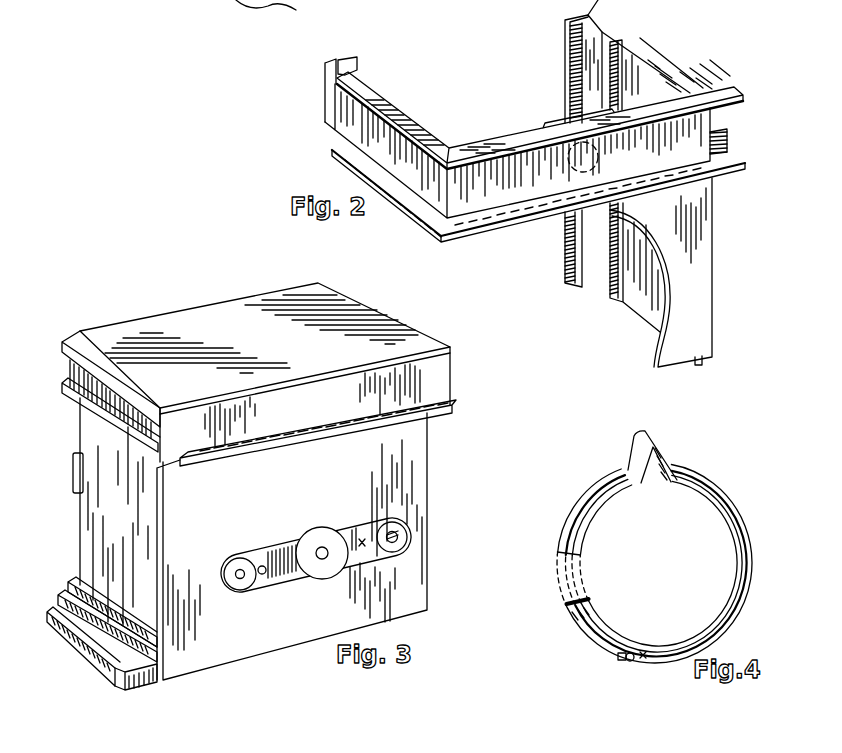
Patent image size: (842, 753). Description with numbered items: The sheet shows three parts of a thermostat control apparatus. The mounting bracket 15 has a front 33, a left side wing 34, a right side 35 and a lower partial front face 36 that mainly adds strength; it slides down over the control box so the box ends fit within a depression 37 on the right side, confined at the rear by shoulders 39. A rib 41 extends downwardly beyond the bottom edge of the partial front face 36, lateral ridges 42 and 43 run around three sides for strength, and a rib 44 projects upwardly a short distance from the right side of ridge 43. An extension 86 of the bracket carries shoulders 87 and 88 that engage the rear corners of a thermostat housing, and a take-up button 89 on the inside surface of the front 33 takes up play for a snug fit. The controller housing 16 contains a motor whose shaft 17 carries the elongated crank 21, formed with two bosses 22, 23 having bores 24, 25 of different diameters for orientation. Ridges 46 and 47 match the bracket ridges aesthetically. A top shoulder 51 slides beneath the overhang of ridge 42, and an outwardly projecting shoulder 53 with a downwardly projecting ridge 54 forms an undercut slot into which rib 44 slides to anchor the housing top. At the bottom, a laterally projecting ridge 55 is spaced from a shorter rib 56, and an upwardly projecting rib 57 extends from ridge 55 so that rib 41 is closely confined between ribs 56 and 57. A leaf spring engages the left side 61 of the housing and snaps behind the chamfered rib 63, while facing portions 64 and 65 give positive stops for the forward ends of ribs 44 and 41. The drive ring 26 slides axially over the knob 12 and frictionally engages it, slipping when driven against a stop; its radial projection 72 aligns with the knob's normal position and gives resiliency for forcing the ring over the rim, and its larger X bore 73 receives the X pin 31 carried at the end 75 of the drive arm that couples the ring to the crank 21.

In FIG. 2, the knob 12 is at (177, 8).
In FIG. 2, the pin 31 is at (245, 8).
In FIG. 2, the end of the drive arm 75 is at (293, 7).
In FIG. 2, the mounting bracket 15 is at (648, 40).
In FIG. 2, the front 33 is at (540, 185).
In FIG. 2, the left side wing 34 is at (438, 192).
In FIG. 2, the right side 35 is at (663, 83).
In FIG. 2, the lower partial front face 36 is at (695, 300).
In FIG. 2, the depression 37 is at (643, 72).
In FIG. 2, the shoulders 39 is at (613, 90).
In FIG. 2, the rib 41 is at (698, 365).
In FIG. 2, the lateral ridge 42 is at (378, 105).
In FIG. 2, the lateral ridge 43 is at (335, 152).
In FIG. 2, the rib 44 is at (726, 133).
In FIG. 2, the extension 86 is at (325, 68).
In FIG. 2, the shoulder 87 is at (566, 52).
In FIG. 2, the shoulder 88 is at (352, 66).
In FIG. 2, the take-up button 89 is at (600, 147).
In FIG. 3, the controller housing 16 is at (225, 313).
In FIG. 3, the shaft 17 is at (323, 548).
In FIG. 3, the crank 21 is at (275, 535).
In FIG. 3, the boss 22 is at (222, 566).
In FIG. 3, the boss 23 is at (407, 527).
In FIG. 3, the bore 24 is at (242, 580).
In FIG. 3, the bore 25 is at (400, 537).
In FIG. 3, the ridge 46 is at (432, 343).
In FIG. 3, the ridge 47 is at (445, 398).
In FIG. 3, the top shoulder 51 is at (73, 340).
In FIG. 3, the shoulder 53 is at (80, 385).
In FIG. 3, the ridge 54 is at (137, 450).
In FIG. 3, the ridge 55 is at (100, 658).
In FIG. 3, the rib 56 is at (80, 582).
In FIG. 3, the rib 57 is at (70, 602).
In FIG. 3, the left side 61 is at (95, 433).
In FIG. 3, the rib 63 is at (76, 495).
In FIG. 3, the facing portion 64 is at (177, 427).
In FIG. 3, the facing portion 65 is at (140, 676).
In FIG. 4, the drive ring 26 is at (600, 480).
In FIG. 4, the radial projection 72 is at (667, 443).
In FIG. 4, the bore 73 is at (632, 653).